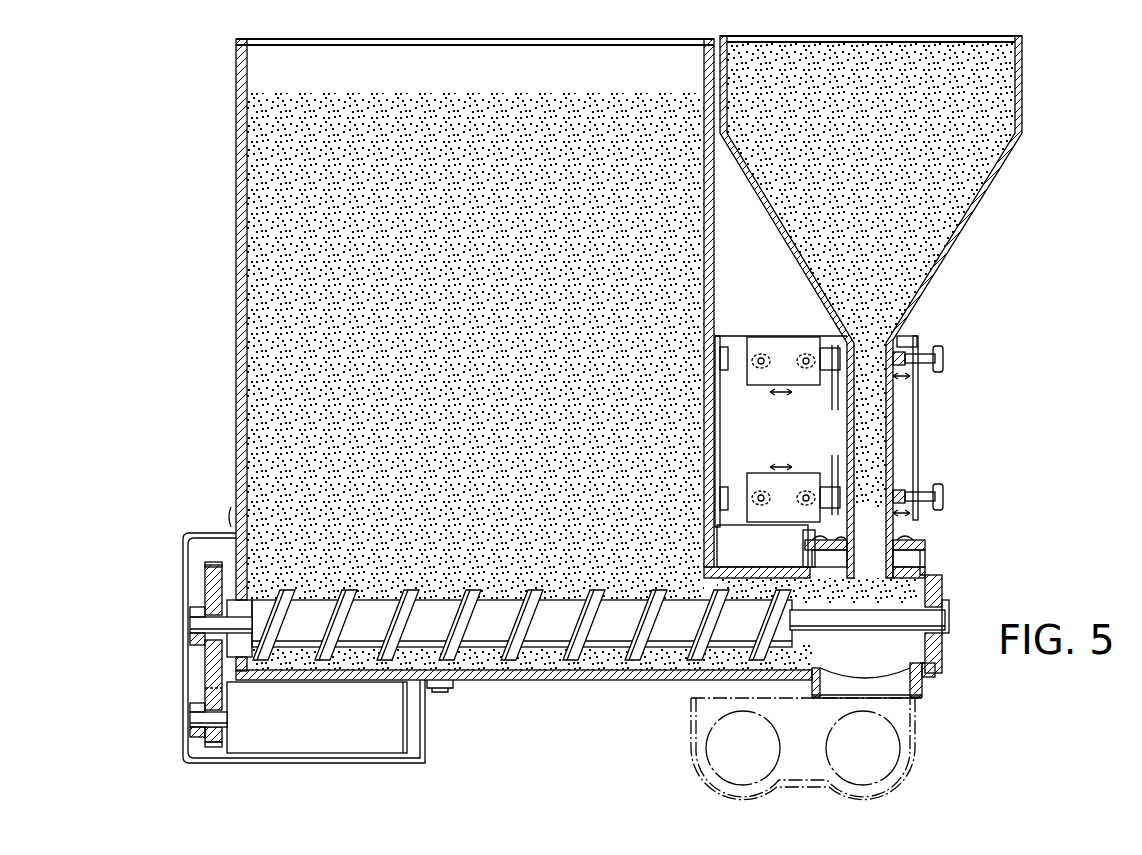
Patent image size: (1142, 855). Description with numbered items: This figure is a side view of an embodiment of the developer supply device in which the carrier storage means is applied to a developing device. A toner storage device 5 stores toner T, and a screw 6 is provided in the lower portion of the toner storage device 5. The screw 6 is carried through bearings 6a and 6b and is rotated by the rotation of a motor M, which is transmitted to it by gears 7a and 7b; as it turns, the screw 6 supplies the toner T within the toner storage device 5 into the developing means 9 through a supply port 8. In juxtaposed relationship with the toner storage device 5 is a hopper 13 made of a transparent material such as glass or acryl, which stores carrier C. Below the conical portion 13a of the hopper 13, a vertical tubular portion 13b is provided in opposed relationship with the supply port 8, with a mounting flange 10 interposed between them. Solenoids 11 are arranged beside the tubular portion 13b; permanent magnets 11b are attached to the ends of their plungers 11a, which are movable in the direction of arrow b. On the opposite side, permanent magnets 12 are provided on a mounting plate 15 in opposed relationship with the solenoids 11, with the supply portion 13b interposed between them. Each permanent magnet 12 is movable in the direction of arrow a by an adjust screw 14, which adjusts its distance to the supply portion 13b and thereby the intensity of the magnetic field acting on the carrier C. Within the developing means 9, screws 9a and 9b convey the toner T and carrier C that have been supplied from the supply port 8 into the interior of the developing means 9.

The toner storage device 5 is at (236, 283).
The toner T is at (247, 365).
The carrier C is at (1000, 85).
The hopper 13 is at (985, 197).
The conical portion 13a is at (925, 283).
The vertical tubular portion 13b is at (890, 404).
The solenoids 11 is at (777, 340).
The plungers 11a is at (832, 375).
The permanent magnets 11b is at (838, 404).
The arrow b is at (782, 396).
The permanent magnets 12 is at (898, 352).
The adjust screw 14 is at (942, 358).
The mounting plate 15 is at (906, 437).
The arrow a is at (902, 379).
The mounting flange 10 is at (915, 541).
The screw 6 is at (546, 650).
The bearing 6a is at (945, 586).
The bearing 6b is at (230, 603).
The gear 7a is at (192, 736).
The gear 7b is at (200, 650).
The motor M is at (316, 745).
The supply port 8 is at (893, 703).
The developing means 9 is at (915, 718).
The screw 9a is at (712, 740).
The screw 9b is at (893, 762).